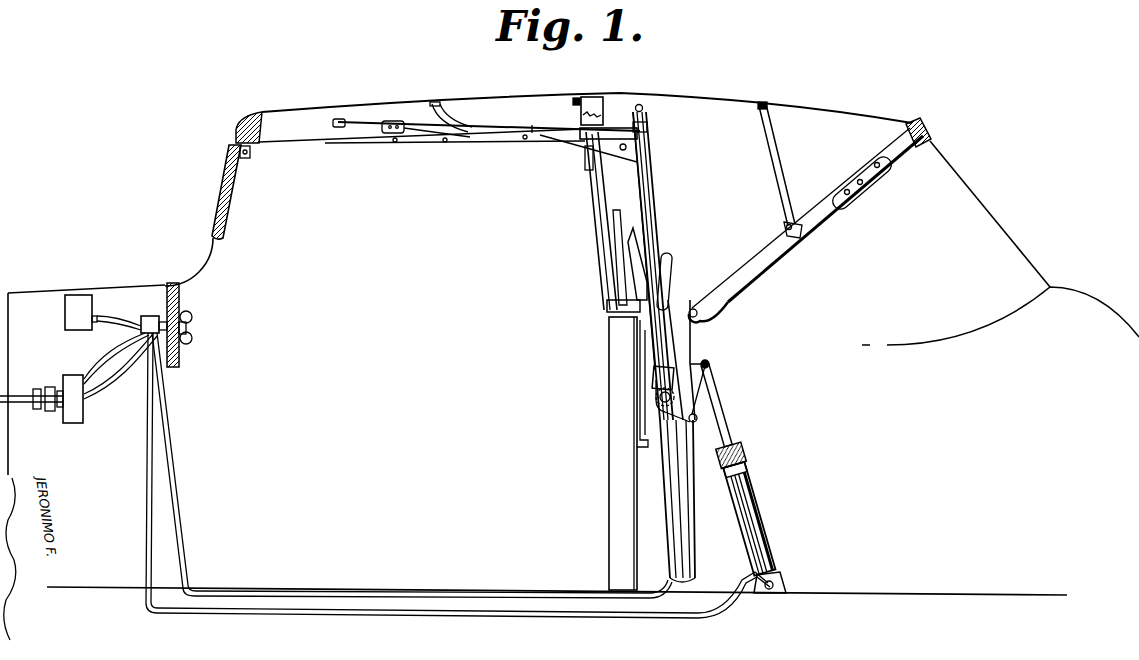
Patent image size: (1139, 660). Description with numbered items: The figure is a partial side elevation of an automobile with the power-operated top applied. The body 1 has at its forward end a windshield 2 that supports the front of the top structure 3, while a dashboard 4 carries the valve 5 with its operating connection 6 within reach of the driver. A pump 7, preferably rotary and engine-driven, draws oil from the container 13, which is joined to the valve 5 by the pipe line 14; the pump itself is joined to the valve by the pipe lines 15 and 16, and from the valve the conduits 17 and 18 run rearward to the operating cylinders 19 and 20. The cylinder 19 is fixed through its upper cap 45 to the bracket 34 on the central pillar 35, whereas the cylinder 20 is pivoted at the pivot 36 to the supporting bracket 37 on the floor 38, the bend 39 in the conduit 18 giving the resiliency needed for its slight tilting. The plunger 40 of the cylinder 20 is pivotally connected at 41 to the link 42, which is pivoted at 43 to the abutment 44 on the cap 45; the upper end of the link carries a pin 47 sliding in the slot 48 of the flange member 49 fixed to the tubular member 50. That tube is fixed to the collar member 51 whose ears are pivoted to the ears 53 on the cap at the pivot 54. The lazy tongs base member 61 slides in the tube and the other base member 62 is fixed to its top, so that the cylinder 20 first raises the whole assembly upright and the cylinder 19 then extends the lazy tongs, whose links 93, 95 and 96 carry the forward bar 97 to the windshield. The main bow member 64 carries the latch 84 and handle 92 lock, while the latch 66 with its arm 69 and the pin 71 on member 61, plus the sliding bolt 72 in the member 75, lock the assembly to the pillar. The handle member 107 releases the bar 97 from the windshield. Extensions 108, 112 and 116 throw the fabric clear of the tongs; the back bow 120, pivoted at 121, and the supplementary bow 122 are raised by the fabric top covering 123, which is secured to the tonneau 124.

The body 1 is at (193, 265).
The windshield 2 is at (217, 190).
The top structure 3 is at (660, 93).
The dashboard 4 is at (181, 298).
The valve 5 is at (148, 317).
The operating connection 6 is at (192, 318).
The pump 7 is at (72, 422).
The container 13 is at (80, 305).
The pipe line 14 is at (107, 328).
The pipe line 15 is at (107, 360).
The pipe line 16 is at (114, 388).
The conduit 17 is at (277, 598).
The conduit 18 is at (285, 610).
The operating cylinder 19 is at (695, 532).
The operating cylinder 20 is at (760, 500).
The bracket 34 is at (640, 447).
The central pillar 35 is at (617, 417).
The pivot 36 is at (775, 577).
The supporting bracket 37 is at (787, 587).
The floor 38 is at (912, 593).
The bend 39 is at (732, 602).
The plunger 40 is at (730, 425).
The pivotal connection 41 is at (712, 363).
The link 42 is at (690, 337).
The pivot 43 is at (698, 415).
The abutment 44 is at (735, 442).
The upper cap 45 is at (734, 464).
The pin 47 is at (690, 292).
The slot 48 is at (715, 322).
The flange member 49 is at (665, 257).
The tubular member 50 is at (643, 213).
The collar member 51 is at (653, 377).
The ears 53 is at (653, 398).
The pivot 54 is at (692, 389).
The base member 61 is at (593, 172).
The base member 62 is at (613, 128).
The main bow member 64 is at (600, 213).
The latch 66 is at (617, 303).
The arm 69 is at (635, 243).
The pin 71 is at (645, 145).
The sliding bolt 72 is at (693, 266).
The member 75 is at (616, 287).
The latch 84 is at (587, 160).
The operating handle 92 is at (575, 98).
The links 93 is at (489, 114).
The link 95 is at (323, 138).
The link 96 is at (365, 136).
The bar 97 is at (247, 124).
The handle member 107 is at (247, 158).
The extension 108 is at (350, 122).
The extension 112 is at (434, 112).
The extension 116 is at (645, 113).
The back bow 120 is at (823, 220).
The pivot 121 is at (697, 305).
The supplementary bow 122 is at (774, 147).
The fabric top covering 123 is at (963, 182).
The tonneau 124 is at (1088, 293).